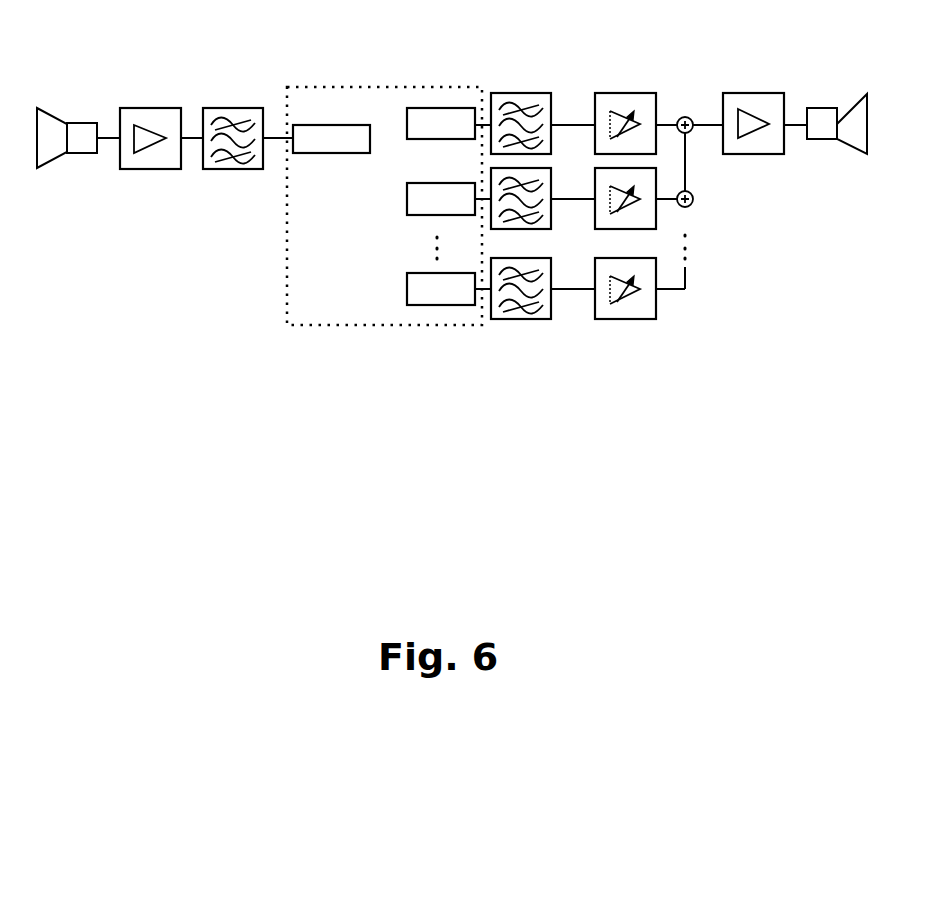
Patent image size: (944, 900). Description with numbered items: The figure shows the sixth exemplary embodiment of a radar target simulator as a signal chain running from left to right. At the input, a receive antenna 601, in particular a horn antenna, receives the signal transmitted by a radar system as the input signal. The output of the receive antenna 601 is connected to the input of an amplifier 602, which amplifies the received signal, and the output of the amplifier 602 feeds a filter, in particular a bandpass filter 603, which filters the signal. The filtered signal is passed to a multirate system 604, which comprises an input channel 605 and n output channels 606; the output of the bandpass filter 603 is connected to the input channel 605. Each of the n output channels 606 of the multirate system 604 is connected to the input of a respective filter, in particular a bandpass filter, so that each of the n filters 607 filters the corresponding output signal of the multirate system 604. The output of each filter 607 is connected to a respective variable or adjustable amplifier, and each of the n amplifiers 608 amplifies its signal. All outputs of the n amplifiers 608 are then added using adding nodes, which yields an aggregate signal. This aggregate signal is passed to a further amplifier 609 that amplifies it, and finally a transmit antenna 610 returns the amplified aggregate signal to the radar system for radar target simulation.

The receive antenna 601 is at (53, 127).
The amplifier 602 is at (156, 116).
The bandpass filter 603 is at (234, 114).
The multirate system 604 is at (385, 93).
The input channel 605 is at (303, 152).
The output channels 606 is at (442, 96).
The filters 607 is at (521, 77).
The amplifiers 608 is at (623, 77).
The amplifier 609 is at (760, 105).
The transmit antenna 610 is at (851, 115).